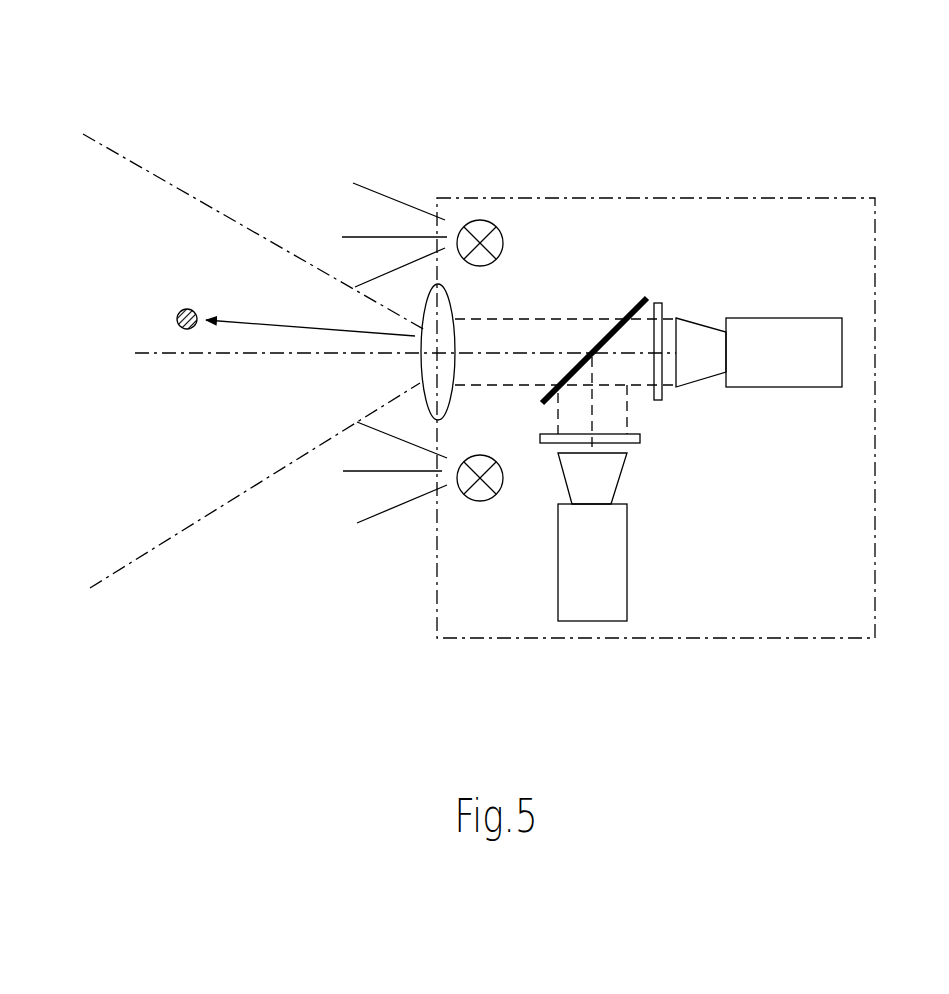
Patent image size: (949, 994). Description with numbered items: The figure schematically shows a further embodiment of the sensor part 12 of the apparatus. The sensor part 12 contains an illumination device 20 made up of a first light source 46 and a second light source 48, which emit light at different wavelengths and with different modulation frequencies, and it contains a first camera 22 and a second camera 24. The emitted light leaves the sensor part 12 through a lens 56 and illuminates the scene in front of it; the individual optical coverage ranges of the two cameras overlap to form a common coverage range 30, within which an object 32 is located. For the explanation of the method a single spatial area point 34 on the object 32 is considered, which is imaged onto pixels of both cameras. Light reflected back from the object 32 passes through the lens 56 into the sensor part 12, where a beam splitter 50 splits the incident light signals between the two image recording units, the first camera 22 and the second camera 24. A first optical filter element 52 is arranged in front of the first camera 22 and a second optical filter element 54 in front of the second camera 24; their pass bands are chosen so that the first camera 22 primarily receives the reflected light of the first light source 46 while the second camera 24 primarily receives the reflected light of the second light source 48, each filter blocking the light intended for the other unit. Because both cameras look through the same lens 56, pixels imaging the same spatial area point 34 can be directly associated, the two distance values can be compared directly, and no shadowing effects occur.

The sensor part 12 is at (700, 197).
The illumination device 20 is at (612, 374).
The first camera 22 is at (593, 621).
The second camera 24 is at (842, 342).
The common coverage range 30 is at (165, 471).
The object 32 is at (160, 298).
The spatial area point 34 is at (192, 308).
The first light source 46 is at (504, 242).
The second light source 48 is at (480, 502).
The beam splitter 50 is at (650, 299).
The first optical filter element 52 is at (640, 437).
The second optical filter element 54 is at (661, 301).
The lens 56 is at (433, 369).